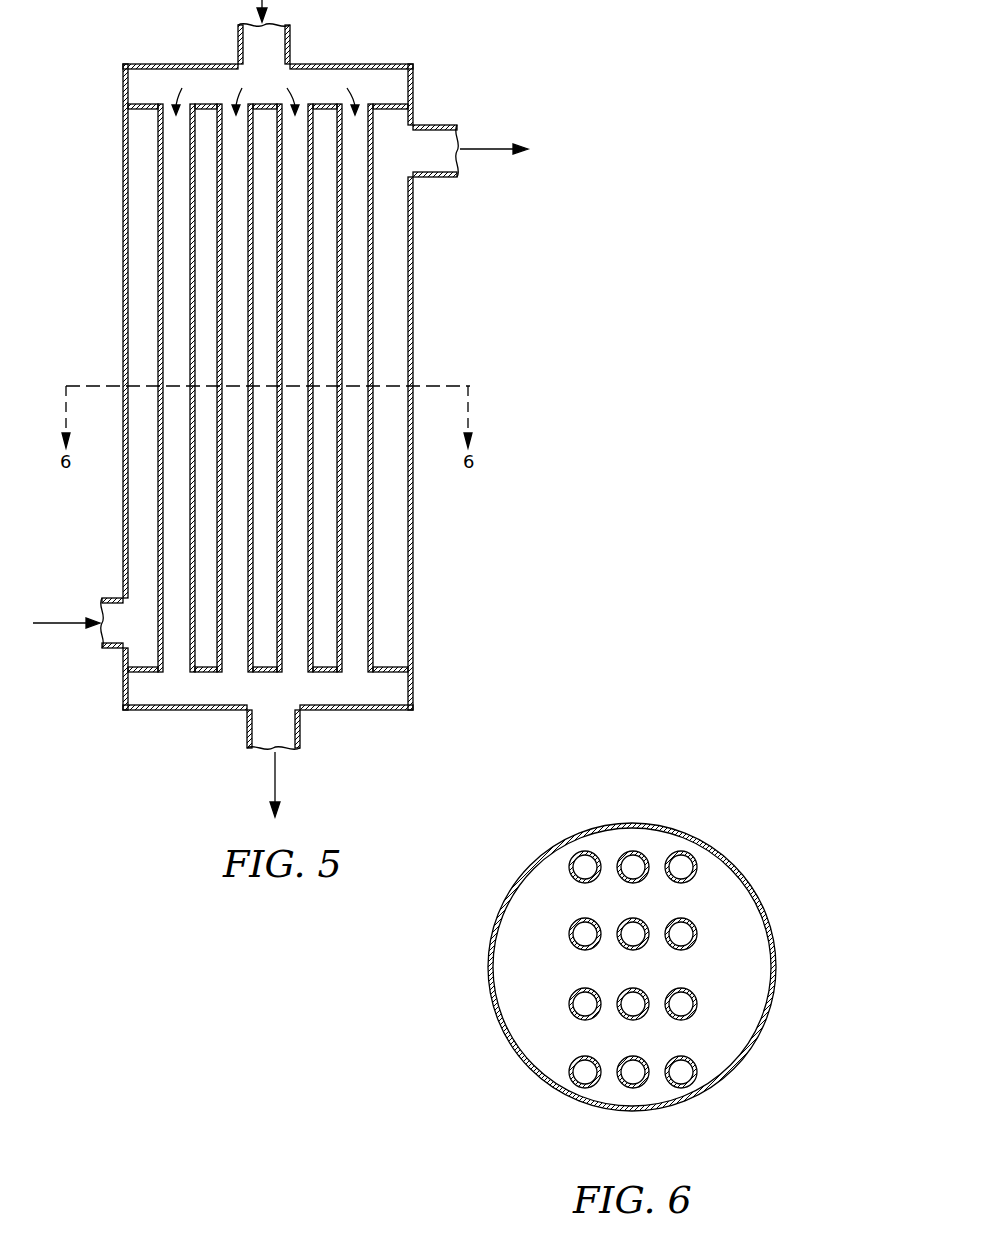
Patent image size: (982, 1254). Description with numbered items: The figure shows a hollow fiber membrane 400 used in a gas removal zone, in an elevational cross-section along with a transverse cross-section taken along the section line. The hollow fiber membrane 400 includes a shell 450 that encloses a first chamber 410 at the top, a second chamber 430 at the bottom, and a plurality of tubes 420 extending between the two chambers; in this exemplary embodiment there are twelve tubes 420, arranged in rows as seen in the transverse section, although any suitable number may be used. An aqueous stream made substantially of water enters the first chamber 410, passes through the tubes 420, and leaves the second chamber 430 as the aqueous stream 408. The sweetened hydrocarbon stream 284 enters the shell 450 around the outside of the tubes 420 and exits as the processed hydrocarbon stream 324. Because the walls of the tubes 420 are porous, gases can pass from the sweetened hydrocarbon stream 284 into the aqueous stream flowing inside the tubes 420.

In FIG. 5, the hollow fiber membrane 400 is at (280, 408).
In FIG. 6, the hollow fiber membrane 400 is at (635, 966).
In FIG. 5, the first chamber 410 is at (124, 86).
In FIG. 5, the tube 420 is at (219, 163).
In FIG. 6, the tube 420 is at (633, 851).
In FIG. 5, the second chamber 430 is at (414, 697).
In FIG. 5, the shell 450 is at (414, 236).
In FIG. 6, the shell 450 is at (718, 856).
In FIG. 5, the hydrocarbon stream 324 is at (498, 148).
In FIG. 5, the sweetened hydrocarbon stream 284 is at (50, 622).
In FIG. 5, the aqueous stream 408 is at (276, 781).